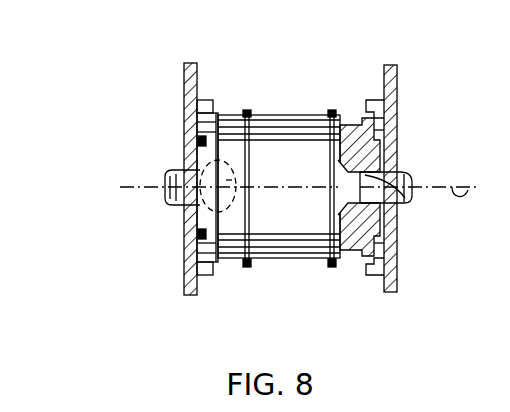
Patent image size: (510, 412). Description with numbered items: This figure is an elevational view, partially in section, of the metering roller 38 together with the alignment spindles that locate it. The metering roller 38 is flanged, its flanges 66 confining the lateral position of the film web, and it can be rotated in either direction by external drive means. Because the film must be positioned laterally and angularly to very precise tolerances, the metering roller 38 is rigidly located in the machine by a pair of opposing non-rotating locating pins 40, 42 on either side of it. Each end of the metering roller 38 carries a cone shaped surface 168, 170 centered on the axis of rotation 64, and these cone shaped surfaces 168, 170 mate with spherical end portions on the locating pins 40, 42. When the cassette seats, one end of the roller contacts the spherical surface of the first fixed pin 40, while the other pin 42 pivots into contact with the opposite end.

The metering roller 38 is at (292, 108).
The locating pin 40 is at (183, 170).
The locating pin 42 is at (409, 184).
The metering roller axis of rotation 64 is at (471, 182).
The flanges 66 is at (247, 110).
The cone shaped surface 168 is at (346, 204).
The cone shaped surface 170 is at (257, 171).